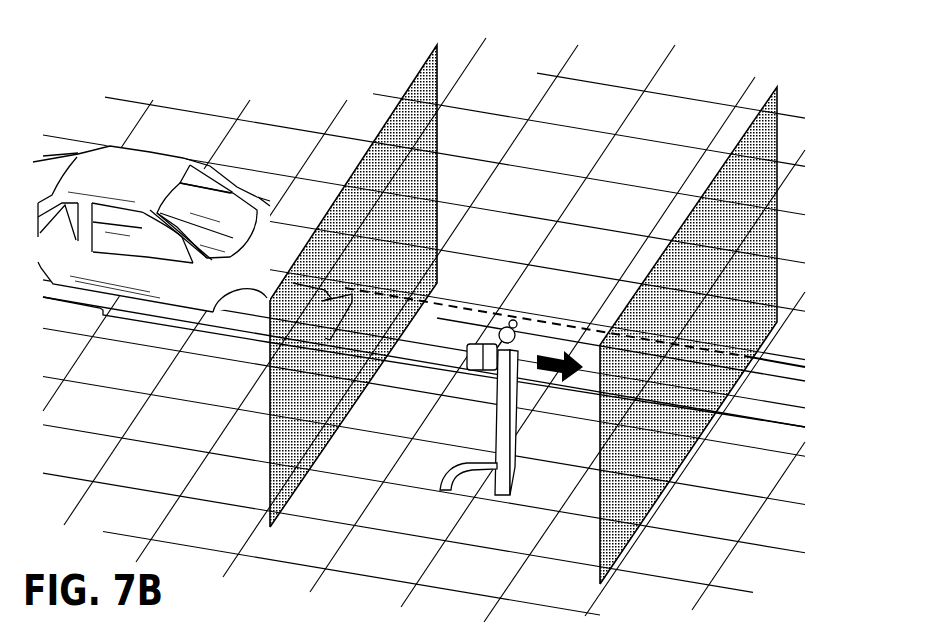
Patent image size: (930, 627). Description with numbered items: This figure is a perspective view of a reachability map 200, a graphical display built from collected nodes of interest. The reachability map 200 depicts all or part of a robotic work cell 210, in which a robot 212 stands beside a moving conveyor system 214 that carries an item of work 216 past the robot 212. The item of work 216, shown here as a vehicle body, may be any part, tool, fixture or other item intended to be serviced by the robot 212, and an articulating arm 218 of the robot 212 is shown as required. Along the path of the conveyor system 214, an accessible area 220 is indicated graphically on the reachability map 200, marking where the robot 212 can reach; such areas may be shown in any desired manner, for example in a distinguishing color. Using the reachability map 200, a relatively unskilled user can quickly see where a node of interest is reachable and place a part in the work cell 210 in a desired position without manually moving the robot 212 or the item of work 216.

The reachability map 200 is at (184, 70).
The work cell 210 is at (513, 72).
The robot 212 is at (507, 437).
The moving conveyor system 214 is at (763, 393).
The item of work 216 is at (100, 158).
The articulating arm 218 is at (465, 345).
The accessible area 220 is at (576, 318).